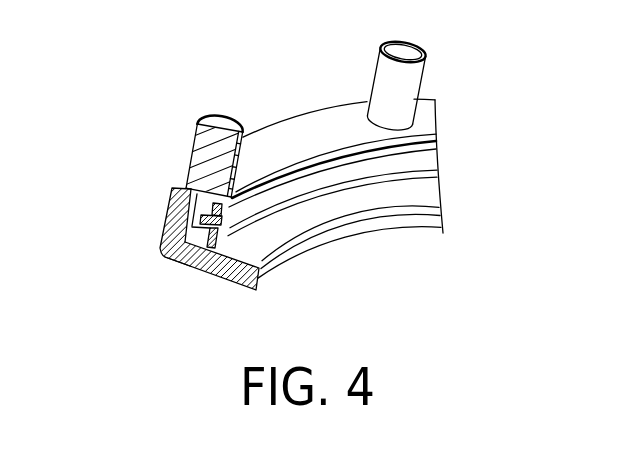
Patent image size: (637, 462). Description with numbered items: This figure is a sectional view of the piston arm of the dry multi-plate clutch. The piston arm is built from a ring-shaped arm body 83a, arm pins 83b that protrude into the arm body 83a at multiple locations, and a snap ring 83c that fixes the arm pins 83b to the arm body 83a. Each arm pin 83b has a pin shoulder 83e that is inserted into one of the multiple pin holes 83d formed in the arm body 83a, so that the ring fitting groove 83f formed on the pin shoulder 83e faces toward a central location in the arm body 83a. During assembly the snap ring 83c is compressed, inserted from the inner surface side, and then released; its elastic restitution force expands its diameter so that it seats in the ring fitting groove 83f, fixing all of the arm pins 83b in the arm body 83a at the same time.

The arm body 83a is at (318, 113).
The arm pins 83b is at (196, 142).
The snap ring 83c is at (220, 228).
The pin holes 83d is at (184, 207).
The pin shoulders 83e is at (190, 260).
The ring fitting grooves 83f is at (206, 203).